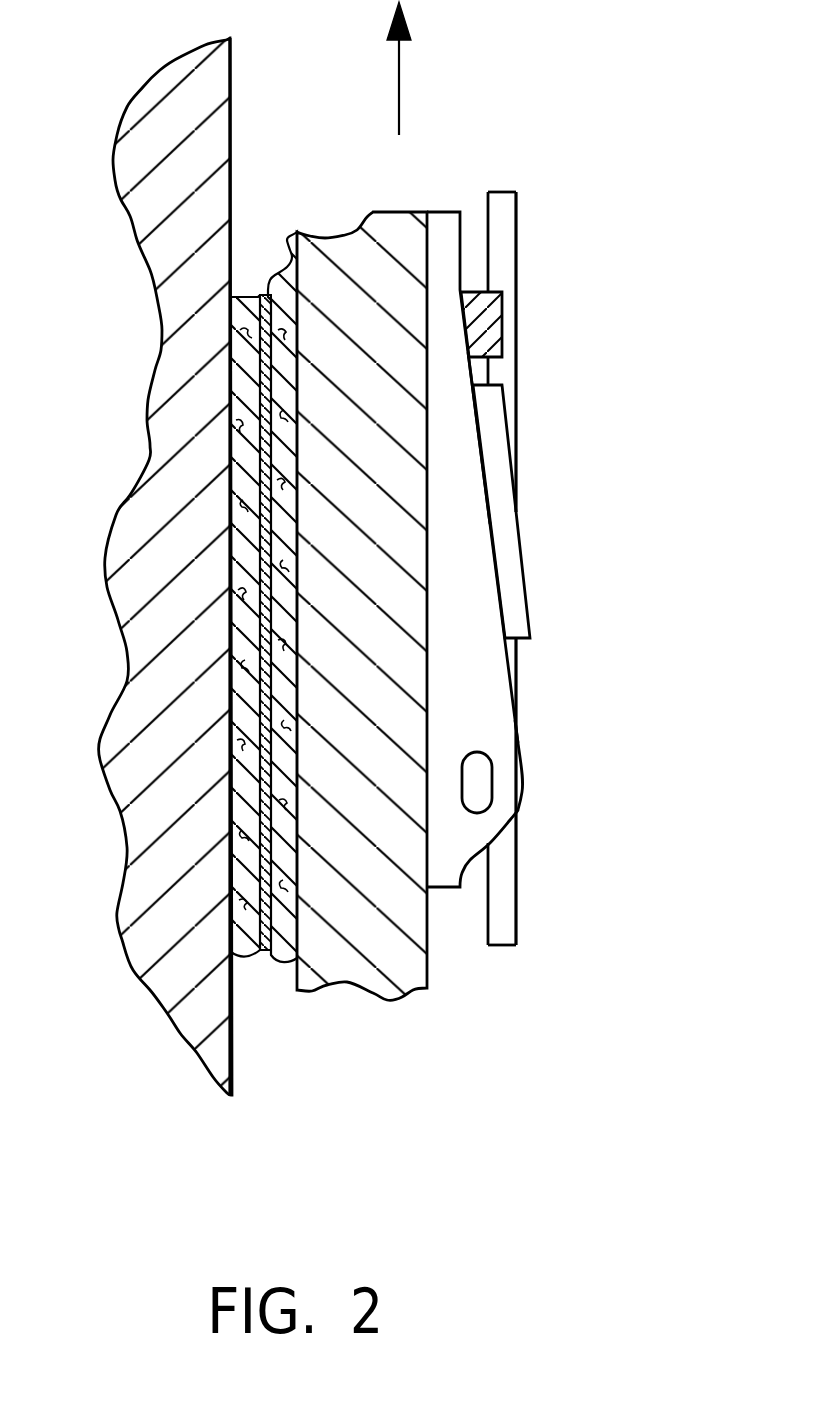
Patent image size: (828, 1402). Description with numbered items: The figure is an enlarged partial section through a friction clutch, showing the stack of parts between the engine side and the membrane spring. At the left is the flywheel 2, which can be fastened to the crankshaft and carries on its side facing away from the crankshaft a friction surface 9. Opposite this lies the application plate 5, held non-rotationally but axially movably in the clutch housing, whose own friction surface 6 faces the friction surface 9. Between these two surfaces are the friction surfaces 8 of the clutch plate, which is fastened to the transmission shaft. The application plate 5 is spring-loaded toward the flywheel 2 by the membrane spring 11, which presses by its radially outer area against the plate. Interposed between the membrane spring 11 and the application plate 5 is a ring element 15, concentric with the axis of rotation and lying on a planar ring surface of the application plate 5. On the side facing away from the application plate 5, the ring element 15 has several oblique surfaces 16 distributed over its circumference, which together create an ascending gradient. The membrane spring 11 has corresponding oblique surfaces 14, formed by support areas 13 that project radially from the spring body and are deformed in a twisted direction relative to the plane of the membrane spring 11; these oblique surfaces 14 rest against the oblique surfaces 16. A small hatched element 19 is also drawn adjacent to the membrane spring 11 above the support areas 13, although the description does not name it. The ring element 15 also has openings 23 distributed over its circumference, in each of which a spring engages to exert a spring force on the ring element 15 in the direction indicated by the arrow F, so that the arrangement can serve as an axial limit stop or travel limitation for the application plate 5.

The flywheel 2 is at (153, 953).
The application plate 5 is at (408, 967).
The friction surface 6 is at (285, 977).
The friction surfaces 8 is at (272, 428).
The friction surface 9 is at (238, 84).
The membrane spring 11 is at (505, 932).
The support areas 13 is at (503, 543).
The oblique surfaces 14 is at (477, 522).
The ring element 15 is at (472, 698).
The oblique surfaces 16 is at (530, 748).
The stop block 19 is at (480, 326).
The openings 23 is at (492, 790).
The arrow F is at (399, 85).